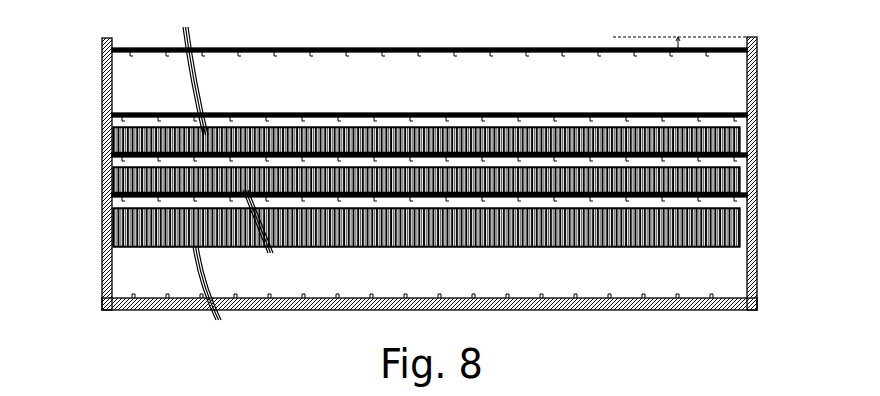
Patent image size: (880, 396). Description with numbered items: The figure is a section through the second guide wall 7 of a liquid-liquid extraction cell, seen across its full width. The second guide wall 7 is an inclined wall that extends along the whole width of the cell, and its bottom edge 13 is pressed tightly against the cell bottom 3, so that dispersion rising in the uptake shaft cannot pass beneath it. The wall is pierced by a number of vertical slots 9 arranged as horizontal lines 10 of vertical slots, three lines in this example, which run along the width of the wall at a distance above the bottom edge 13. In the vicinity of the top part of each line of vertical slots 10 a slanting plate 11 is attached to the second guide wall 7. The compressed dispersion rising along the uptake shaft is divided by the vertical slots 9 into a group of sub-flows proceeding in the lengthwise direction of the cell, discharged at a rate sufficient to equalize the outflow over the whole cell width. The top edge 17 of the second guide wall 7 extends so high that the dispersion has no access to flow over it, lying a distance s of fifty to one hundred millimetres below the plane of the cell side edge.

The bottom 3 is at (323, 298).
The second guide wall 7 is at (422, 91).
The vertical slots 9 is at (185, 30).
The horizontal lines of vertical slots 10 is at (120, 140).
The slanting plate 11 is at (105, 116).
The bottom edge 13 is at (350, 298).
The top edge 17 is at (545, 50).